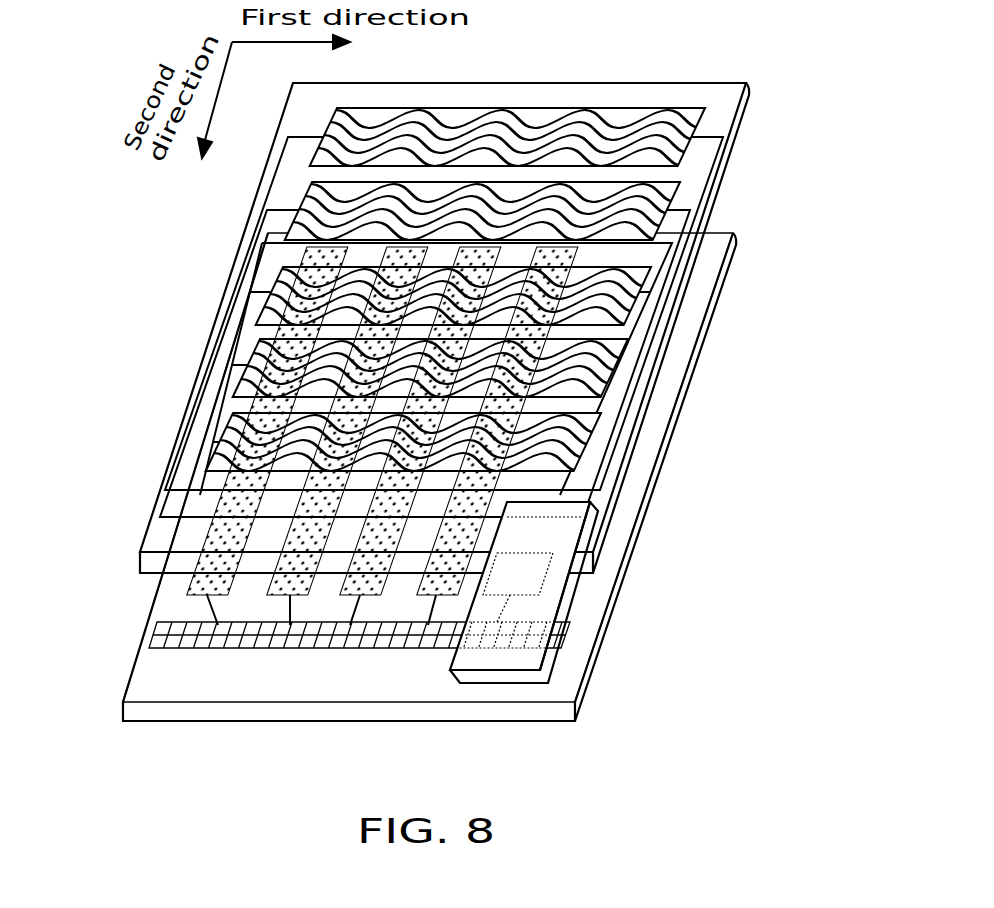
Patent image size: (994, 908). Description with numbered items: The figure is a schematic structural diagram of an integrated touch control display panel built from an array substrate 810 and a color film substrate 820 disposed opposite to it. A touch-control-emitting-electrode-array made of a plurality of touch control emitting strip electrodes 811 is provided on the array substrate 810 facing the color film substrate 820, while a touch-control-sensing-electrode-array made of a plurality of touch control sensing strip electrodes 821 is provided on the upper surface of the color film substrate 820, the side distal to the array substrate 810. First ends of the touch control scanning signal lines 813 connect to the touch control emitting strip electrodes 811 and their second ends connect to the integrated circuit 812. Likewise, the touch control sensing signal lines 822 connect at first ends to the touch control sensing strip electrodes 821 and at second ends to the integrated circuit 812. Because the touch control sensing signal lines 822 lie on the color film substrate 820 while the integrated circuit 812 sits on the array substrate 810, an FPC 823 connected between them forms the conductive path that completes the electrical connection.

The array substrate 810 is at (717, 290).
The touch control emitting strip electrodes 811 is at (207, 583).
The integrated circuit 812 is at (158, 633).
The touch control scanning signal lines 813 is at (163, 608).
The color film substrate 820 is at (716, 115).
The touch control sensing strip electrodes 821 is at (477, 133).
The touch control sensing signal lines 822 is at (252, 262).
The FPC 823 is at (533, 607).